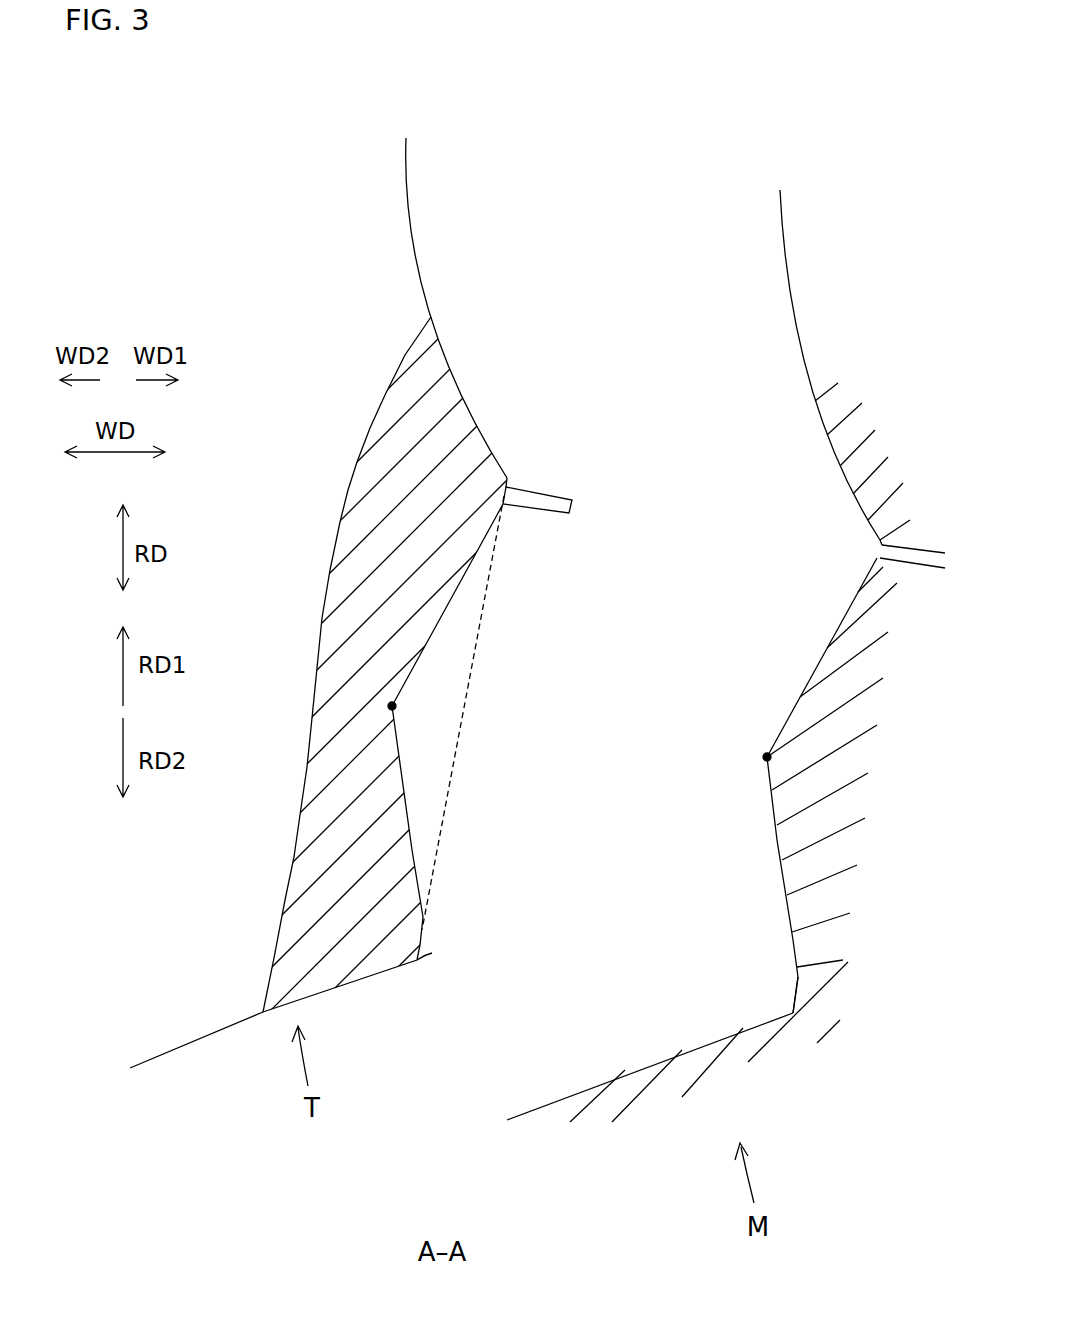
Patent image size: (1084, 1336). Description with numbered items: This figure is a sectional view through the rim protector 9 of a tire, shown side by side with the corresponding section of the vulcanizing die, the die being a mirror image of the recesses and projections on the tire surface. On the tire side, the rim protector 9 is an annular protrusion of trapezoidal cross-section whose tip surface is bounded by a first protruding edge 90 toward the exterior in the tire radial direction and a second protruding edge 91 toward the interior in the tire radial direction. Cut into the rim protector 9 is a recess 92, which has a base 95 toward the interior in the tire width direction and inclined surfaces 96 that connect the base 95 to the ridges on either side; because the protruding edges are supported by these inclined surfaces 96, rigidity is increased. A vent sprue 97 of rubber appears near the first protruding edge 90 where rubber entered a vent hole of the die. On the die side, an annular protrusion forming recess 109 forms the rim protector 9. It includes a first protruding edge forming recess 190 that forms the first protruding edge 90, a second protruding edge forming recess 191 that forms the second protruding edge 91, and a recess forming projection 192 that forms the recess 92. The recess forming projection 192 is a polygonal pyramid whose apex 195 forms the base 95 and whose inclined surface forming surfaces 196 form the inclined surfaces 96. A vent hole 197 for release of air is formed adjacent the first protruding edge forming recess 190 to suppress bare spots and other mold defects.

The rim protector 9 is at (571, 577).
The first protruding edge 90 is at (509, 486).
The second protruding edge 91 is at (420, 958).
The recess 92 is at (418, 716).
The base 95 is at (392, 706).
The inclined surface 96 is at (437, 627).
The vent sprue 97 is at (572, 507).
The annular protrusion forming recess 109 is at (654, 618).
The first protruding edge forming recess 190 is at (881, 542).
The second protruding edge forming recess 191 is at (794, 996).
The recess forming projection 192 is at (781, 699).
The apex 195 is at (767, 758).
The inclined surface forming surface 196 is at (827, 647).
The vent hole 197 is at (864, 557).